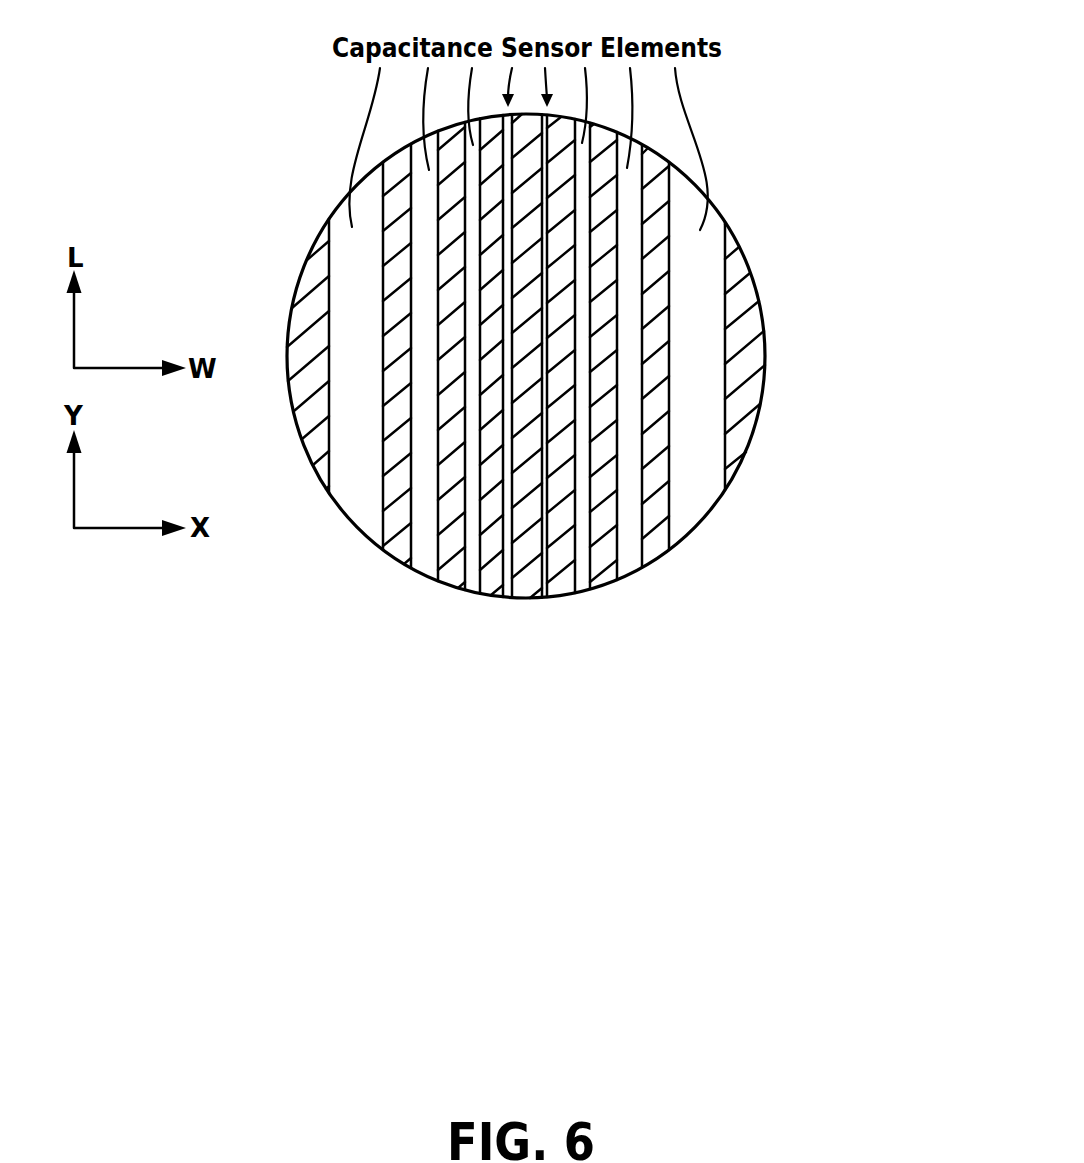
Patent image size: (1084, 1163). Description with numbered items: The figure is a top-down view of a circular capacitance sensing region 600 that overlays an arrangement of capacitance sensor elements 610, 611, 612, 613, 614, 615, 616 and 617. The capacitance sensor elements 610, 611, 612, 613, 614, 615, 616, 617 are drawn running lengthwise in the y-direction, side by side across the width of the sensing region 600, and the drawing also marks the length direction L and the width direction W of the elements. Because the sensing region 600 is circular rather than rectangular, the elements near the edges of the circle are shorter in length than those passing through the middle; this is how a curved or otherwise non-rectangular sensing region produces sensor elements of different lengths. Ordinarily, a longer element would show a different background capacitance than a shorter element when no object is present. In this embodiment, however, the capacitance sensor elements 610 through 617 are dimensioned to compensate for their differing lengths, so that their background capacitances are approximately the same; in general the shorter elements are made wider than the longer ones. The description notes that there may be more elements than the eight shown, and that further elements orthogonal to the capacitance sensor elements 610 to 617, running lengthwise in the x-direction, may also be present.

The capacitance sensing region 600 is at (790, 246).
The capacitance sensor element 610 is at (358, 512).
The capacitance sensor element 611 is at (425, 565).
The capacitance sensor element 612 is at (472, 583).
The capacitance sensor element 613 is at (505, 614).
The capacitance sensor element 614 is at (544, 614).
The capacitance sensor element 615 is at (580, 583).
The capacitance sensor element 616 is at (628, 556).
The capacitance sensor element 617 is at (700, 500).